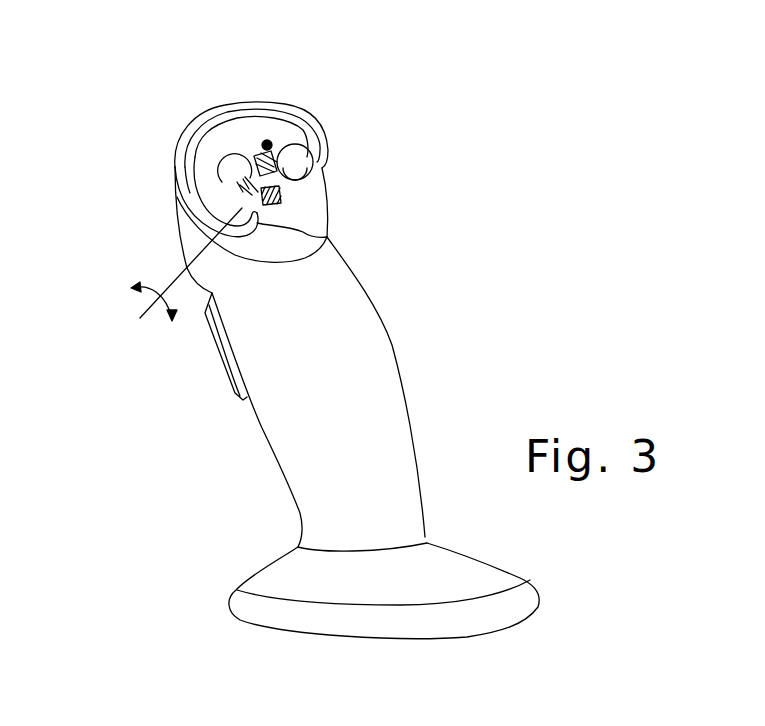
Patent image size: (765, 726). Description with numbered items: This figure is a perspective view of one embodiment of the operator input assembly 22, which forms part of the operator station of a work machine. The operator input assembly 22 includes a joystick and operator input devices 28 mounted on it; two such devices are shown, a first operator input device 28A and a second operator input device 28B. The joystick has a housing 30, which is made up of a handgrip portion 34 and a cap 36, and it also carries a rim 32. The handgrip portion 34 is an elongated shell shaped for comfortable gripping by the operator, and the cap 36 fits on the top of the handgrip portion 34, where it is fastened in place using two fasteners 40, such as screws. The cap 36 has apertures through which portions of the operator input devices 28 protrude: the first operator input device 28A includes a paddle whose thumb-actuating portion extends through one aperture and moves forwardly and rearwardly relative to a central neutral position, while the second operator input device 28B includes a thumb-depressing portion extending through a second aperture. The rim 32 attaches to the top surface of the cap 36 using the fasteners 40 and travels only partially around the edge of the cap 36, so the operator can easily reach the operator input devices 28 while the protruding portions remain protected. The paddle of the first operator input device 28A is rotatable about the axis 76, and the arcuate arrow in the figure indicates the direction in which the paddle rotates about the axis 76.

The operator input assembly 22 is at (588, 201).
The operator input device 28 is at (120, 58).
The first operator input device 28A is at (242, 175).
The second operator input device 28B is at (297, 158).
The housing 30 is at (457, 215).
The rim 32 is at (335, 140).
The handgrip portion 34 is at (348, 318).
The cap 36 is at (315, 203).
The fastener 40 is at (268, 140).
The axis 76 is at (171, 290).